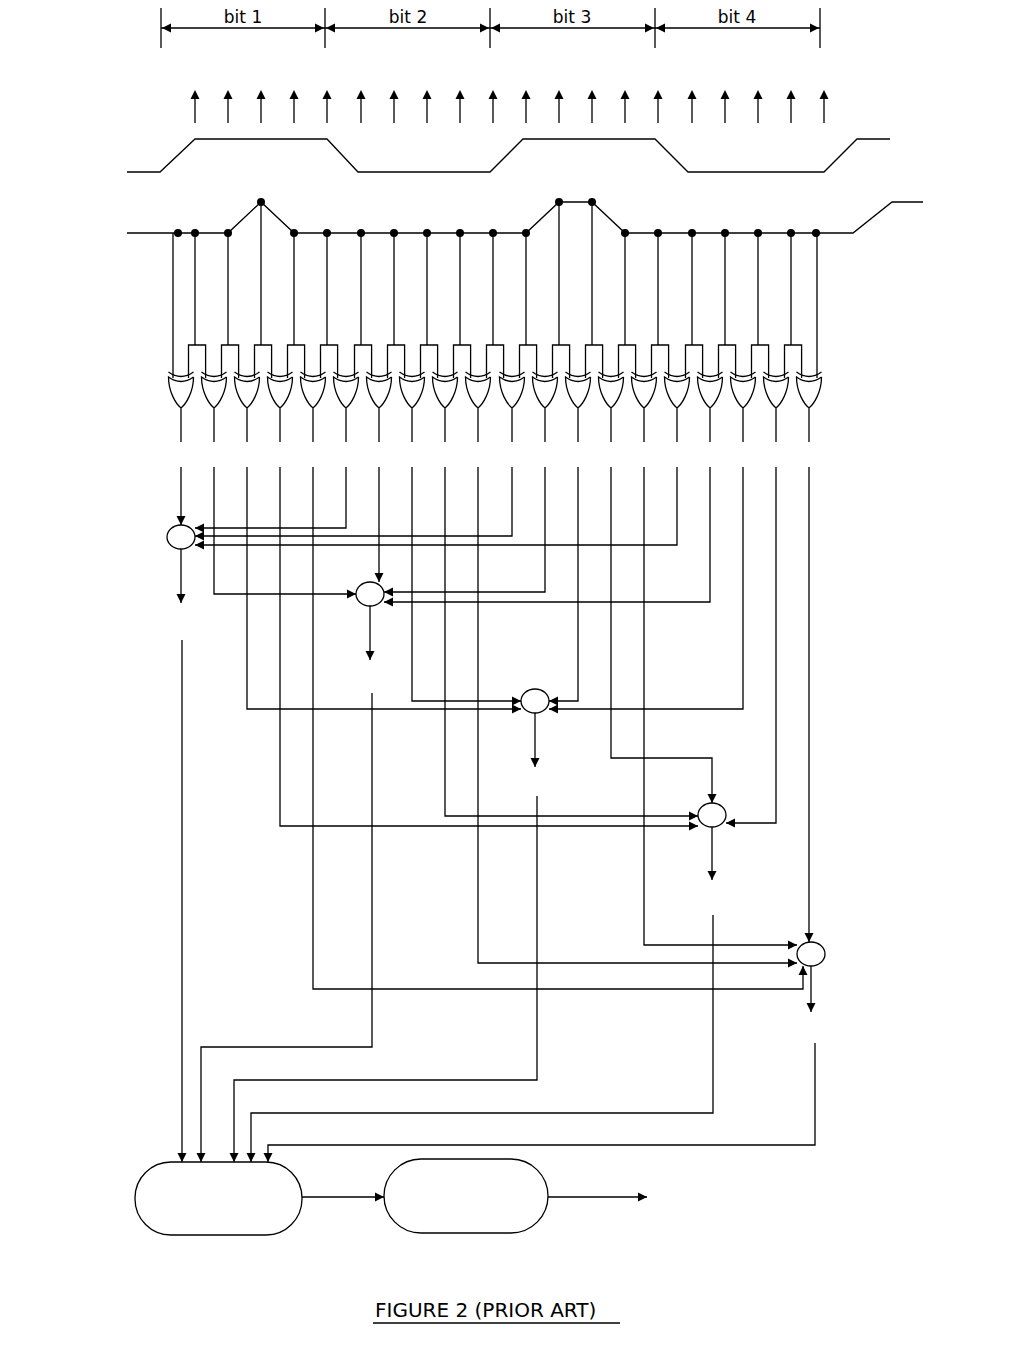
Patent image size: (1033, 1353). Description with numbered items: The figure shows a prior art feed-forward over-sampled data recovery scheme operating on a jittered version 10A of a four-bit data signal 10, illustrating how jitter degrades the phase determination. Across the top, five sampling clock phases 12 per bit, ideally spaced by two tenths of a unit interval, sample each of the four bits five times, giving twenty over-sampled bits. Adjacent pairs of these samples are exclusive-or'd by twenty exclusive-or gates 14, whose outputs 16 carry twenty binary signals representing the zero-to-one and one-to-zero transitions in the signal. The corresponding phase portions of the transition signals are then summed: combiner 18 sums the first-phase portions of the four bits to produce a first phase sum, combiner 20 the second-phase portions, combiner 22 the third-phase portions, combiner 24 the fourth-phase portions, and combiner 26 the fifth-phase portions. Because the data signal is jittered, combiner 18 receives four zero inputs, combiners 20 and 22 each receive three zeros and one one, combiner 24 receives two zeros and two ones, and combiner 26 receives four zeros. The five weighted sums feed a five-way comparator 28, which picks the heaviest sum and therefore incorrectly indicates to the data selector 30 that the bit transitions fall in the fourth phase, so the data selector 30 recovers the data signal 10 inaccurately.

The data signal 10 is at (135, 162).
The jittered version of data signal 10A is at (218, 213).
The sampling clock phases 12 is at (135, 76).
The exclusive-or gates 14 is at (135, 388).
The outputs 16 is at (135, 453).
The combiner 18 is at (171, 543).
The combiner 20 is at (368, 581).
The combiner 22 is at (544, 686).
The combiner 24 is at (710, 835).
The combiner 26 is at (825, 945).
The 5-way comparator 28 is at (146, 1166).
The data selector 30 is at (542, 1220).